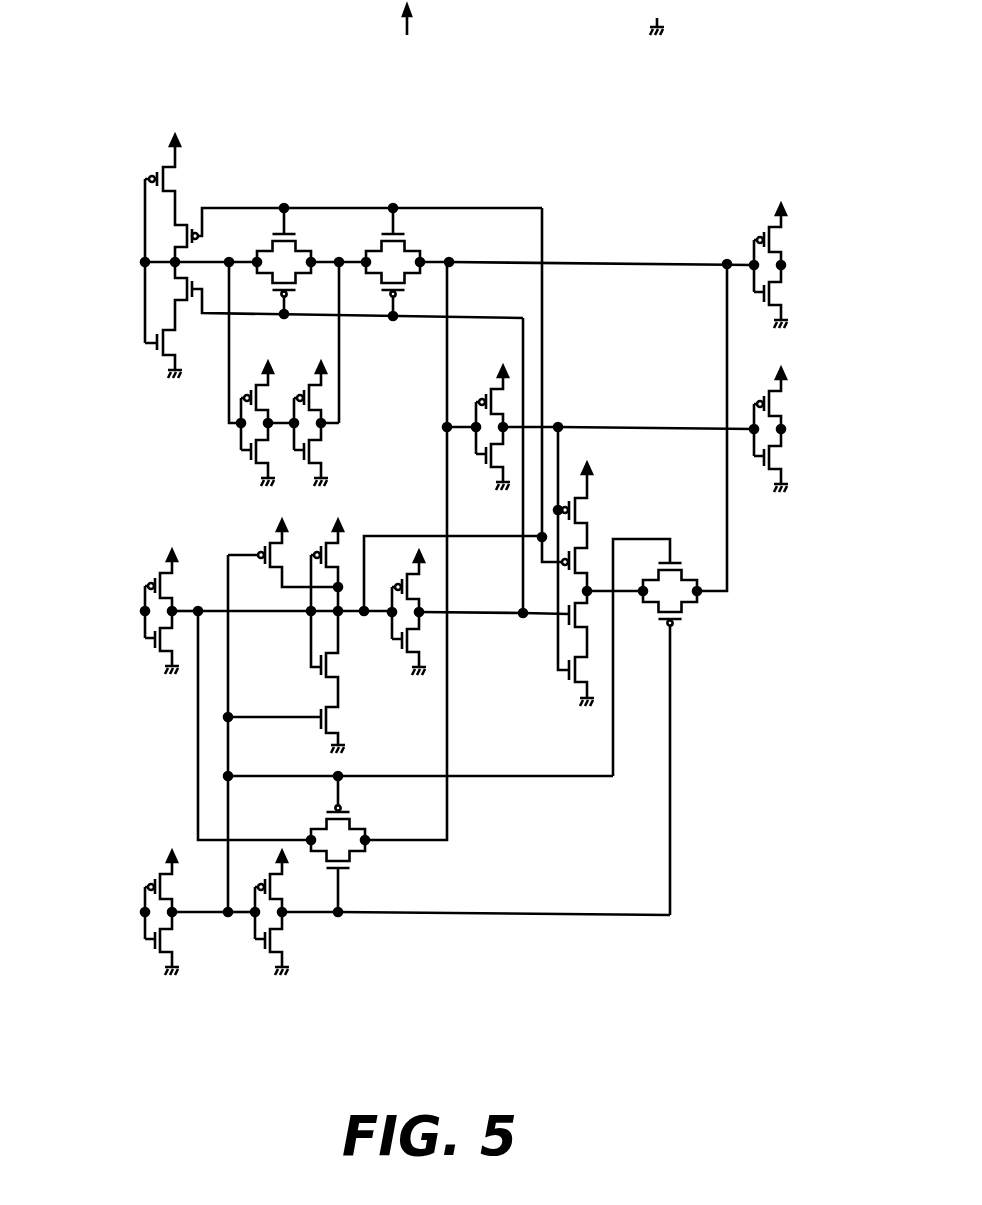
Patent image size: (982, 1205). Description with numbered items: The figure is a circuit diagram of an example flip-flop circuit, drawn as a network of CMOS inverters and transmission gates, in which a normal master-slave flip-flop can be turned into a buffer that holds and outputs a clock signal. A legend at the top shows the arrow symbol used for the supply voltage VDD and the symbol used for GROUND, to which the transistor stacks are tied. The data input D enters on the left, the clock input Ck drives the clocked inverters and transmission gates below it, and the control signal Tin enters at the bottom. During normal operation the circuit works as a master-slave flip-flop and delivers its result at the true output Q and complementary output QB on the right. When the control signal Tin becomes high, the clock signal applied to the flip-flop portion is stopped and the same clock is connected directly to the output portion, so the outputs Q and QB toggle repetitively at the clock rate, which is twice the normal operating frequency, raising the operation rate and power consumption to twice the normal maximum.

The data input terminal D is at (145, 262).
The clock input terminal Ck is at (145, 611).
The control signal Tin is at (145, 912).
The true output terminal Q is at (781, 265).
The complementary output terminal QB is at (781, 429).
The supply voltage VDD is at (483, 52).
The ground GROUND is at (726, 26).